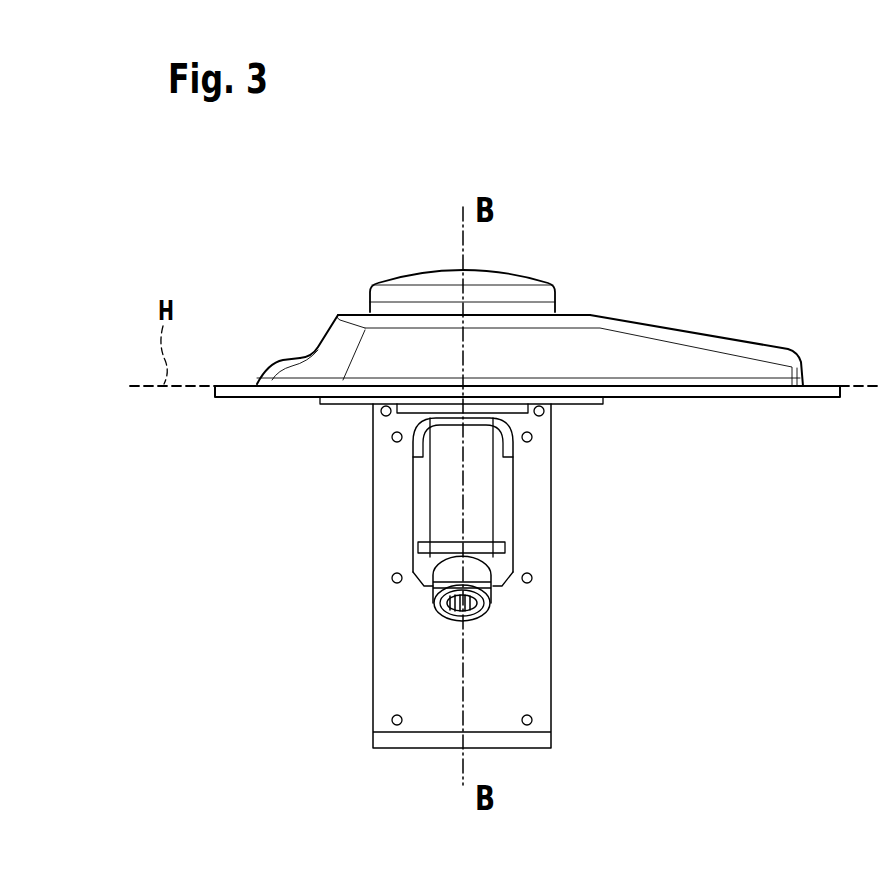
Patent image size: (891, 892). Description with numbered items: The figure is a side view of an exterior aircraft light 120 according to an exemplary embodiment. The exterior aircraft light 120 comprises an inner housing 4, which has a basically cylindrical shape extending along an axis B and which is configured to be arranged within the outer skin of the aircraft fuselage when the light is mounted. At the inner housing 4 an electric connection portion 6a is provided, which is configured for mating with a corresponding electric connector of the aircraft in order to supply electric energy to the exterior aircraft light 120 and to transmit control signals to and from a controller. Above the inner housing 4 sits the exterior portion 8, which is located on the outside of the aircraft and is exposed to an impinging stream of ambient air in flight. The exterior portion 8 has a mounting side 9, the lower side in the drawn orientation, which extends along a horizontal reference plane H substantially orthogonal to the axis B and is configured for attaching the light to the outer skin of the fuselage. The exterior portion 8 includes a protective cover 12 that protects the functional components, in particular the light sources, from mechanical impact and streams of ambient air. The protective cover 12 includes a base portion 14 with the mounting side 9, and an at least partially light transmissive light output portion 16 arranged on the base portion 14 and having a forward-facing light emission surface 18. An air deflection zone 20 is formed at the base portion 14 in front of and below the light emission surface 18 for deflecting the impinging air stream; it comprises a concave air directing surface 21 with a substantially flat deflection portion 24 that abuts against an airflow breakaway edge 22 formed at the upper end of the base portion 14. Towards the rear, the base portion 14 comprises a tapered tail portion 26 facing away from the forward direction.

The exterior portion 8 is at (750, 198).
The protective cover 12 is at (638, 222).
The light output portion 16 is at (530, 268).
The light emission surface 18 is at (358, 295).
The airflow breakaway edge 22 is at (338, 317).
The deflection portion 24 is at (333, 328).
The concave air directing surface 21 is at (317, 348).
The air deflection zone 20 is at (303, 350).
The base portion 14 is at (768, 315).
The tapered tail portion 26 is at (668, 323).
The mounting side 9 is at (713, 407).
The inner housing 4 is at (357, 615).
The electric connection portion 6a is at (497, 617).
The exterior aircraft light 120 is at (250, 678).